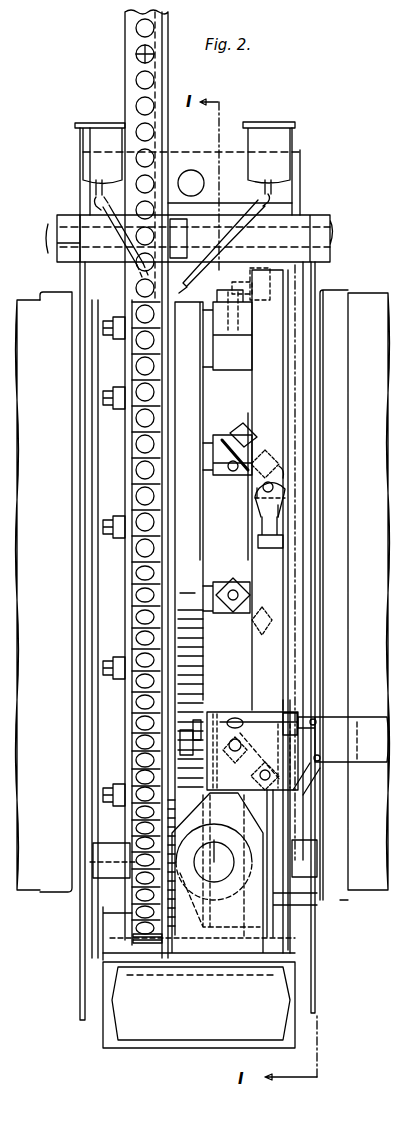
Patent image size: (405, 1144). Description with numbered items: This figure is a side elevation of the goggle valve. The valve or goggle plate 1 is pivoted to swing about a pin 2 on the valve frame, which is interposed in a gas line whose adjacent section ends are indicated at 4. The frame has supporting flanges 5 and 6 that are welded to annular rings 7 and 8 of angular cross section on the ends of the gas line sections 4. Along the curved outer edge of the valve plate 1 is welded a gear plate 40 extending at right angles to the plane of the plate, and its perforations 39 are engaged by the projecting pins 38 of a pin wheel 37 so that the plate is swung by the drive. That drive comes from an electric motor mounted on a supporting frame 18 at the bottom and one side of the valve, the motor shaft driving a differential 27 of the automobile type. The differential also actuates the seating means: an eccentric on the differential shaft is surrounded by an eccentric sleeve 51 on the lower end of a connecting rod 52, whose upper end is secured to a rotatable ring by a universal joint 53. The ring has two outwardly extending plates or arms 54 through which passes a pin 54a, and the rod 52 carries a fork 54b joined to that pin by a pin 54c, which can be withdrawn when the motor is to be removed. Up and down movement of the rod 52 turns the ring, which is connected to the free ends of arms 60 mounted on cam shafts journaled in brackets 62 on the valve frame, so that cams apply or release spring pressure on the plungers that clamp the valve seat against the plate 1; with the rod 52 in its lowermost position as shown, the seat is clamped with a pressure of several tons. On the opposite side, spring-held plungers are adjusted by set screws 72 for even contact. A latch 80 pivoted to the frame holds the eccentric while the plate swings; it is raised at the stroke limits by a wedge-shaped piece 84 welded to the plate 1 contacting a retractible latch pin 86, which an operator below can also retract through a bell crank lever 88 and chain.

The valve or goggle plate 1 is at (168, 60).
The pin 2 is at (79, 207).
The gas line sections 4 is at (27, 297).
The supporting flange 5 is at (80, 361).
The supporting flange 6 is at (305, 322).
The annular ring 7 is at (57, 298).
The annular ring 8 is at (324, 289).
The supporting frame 18 is at (108, 1031).
The differential 27 is at (203, 927).
The pin wheel 37 is at (132, 897).
The projecting pins 38 is at (132, 922).
The perforations 39 is at (136, 29).
The gear plate 40 is at (130, 67).
The eccentric sleeve 51 is at (283, 926).
The connecting rod 52 is at (280, 681).
The universal joint 53 is at (278, 488).
The plates or arms 54 is at (285, 541).
The pin 54a is at (283, 478).
The fork 54b is at (277, 505).
The pin 54c is at (258, 490).
The arms 60 is at (253, 287).
The brackets 62 is at (222, 327).
The set screw 72 is at (107, 657).
The latch 80 is at (288, 773).
The wedge-shaped piece 84 is at (187, 730).
The retractible latch pin 86 is at (198, 719).
The bell crank lever 88 is at (372, 746).